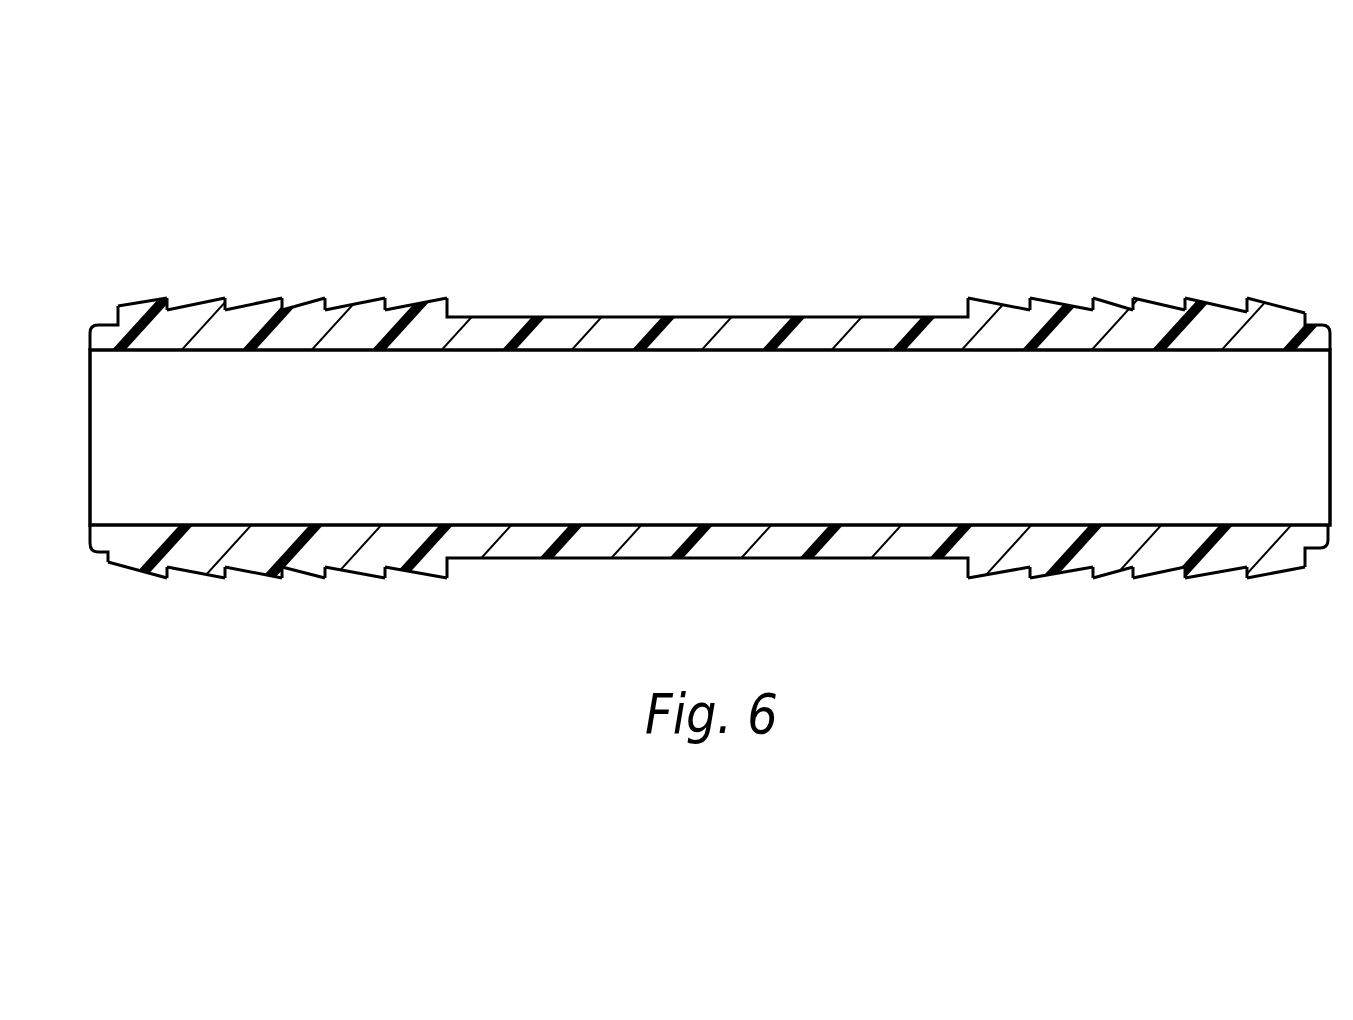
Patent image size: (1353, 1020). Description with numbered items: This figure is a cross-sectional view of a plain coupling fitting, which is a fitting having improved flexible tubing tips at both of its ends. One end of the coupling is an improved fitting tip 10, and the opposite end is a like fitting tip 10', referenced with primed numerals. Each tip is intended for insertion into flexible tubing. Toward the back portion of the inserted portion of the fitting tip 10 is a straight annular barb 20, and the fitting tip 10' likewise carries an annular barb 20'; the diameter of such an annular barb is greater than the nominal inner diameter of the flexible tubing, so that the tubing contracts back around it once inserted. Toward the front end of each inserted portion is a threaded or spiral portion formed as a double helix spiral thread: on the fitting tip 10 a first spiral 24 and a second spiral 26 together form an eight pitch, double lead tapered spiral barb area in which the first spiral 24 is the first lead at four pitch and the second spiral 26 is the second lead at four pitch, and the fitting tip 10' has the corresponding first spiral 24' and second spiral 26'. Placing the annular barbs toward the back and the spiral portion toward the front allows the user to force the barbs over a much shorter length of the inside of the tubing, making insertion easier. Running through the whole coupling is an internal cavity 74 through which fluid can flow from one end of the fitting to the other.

The fitting tip 10 is at (407, 191).
The fitting tip 10' is at (1252, 152).
The annular barb 20 is at (399, 445).
The annular barb 20' is at (1019, 423).
The first spiral 24 is at (268, 444).
The first spiral 24' is at (1139, 452).
The second spiral 26 is at (244, 444).
The second spiral 26' is at (1182, 418).
The internal cavity 74 is at (663, 420).